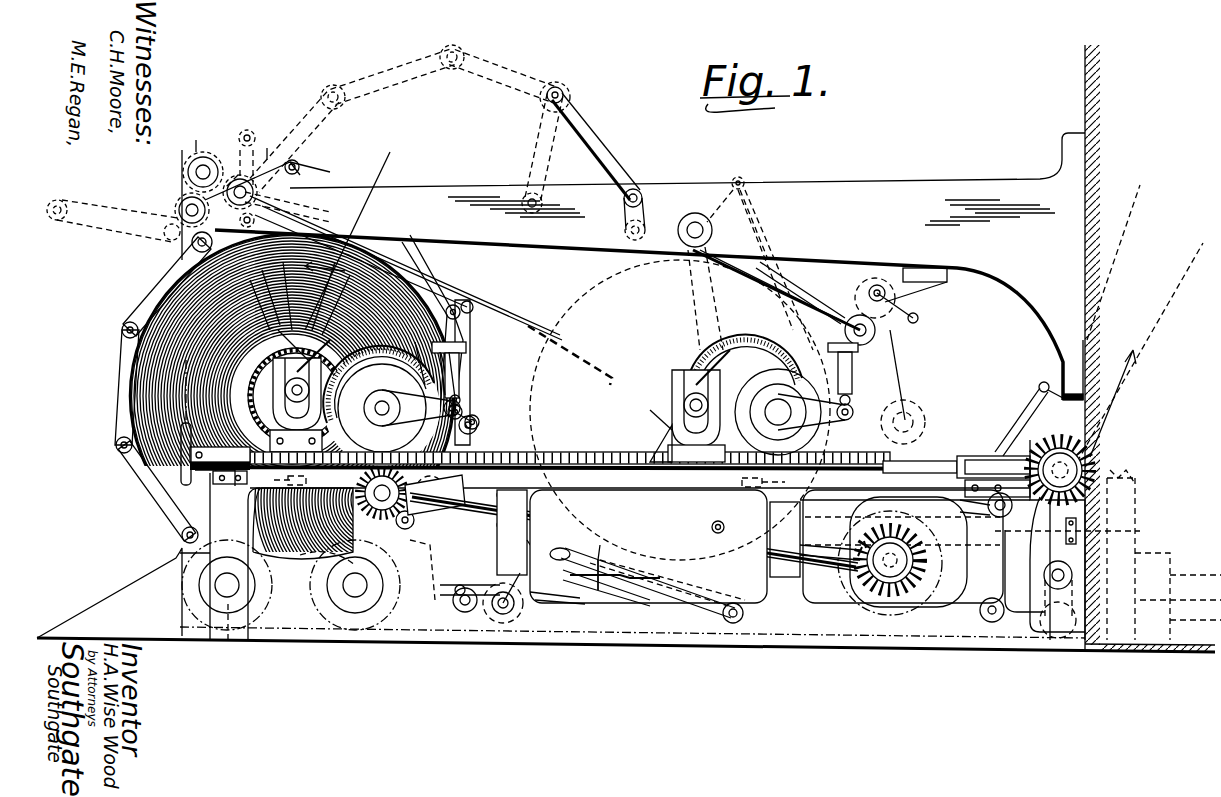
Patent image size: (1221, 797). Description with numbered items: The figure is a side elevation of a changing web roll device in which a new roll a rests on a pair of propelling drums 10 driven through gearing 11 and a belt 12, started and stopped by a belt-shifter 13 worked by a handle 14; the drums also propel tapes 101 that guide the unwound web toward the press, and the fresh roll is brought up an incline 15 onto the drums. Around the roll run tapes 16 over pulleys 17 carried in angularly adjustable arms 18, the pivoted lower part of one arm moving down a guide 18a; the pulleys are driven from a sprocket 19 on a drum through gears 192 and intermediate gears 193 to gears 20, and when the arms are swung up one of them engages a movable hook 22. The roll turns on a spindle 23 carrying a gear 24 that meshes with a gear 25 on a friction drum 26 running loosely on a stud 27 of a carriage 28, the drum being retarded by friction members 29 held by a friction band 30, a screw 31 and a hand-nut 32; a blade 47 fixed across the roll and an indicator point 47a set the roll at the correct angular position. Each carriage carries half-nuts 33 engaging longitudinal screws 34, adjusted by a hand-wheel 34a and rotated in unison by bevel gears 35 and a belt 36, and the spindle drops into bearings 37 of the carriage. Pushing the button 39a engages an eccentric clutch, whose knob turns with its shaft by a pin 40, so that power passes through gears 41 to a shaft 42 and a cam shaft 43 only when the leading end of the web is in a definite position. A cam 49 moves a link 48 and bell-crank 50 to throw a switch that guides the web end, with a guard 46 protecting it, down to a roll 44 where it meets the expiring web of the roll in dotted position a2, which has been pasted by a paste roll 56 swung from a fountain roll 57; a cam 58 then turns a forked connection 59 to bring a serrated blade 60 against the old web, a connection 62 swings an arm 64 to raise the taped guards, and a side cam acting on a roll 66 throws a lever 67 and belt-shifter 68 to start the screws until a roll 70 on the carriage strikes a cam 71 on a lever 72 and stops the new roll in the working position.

The propelling drums 10 is at (203, 620).
The gearing 11 is at (420, 660).
The belt 12 is at (1127, 486).
The belt-shifter 13 is at (1010, 530).
The handle 14 is at (650, 580).
The incline 15 is at (128, 597).
The tapes 16 is at (460, 250).
The pulleys 17 is at (505, 272).
The arms 18 is at (135, 398).
The guide 18a is at (478, 427).
The sprocket 19 is at (265, 605).
The gears 20 is at (422, 355).
The movable hook 22 is at (570, 110).
The spindle 23 is at (309, 342).
The gear 24 is at (280, 345).
The gear 25 is at (396, 372).
The friction drum 26 is at (720, 352).
The stud 27 is at (390, 408).
The carriage 28 is at (262, 404).
The friction members 29 is at (458, 375).
The friction band 30 is at (462, 362).
The screw 31 is at (465, 402).
The hand-nut 32 is at (466, 345).
The half-nuts 33 is at (262, 478).
The longitudinal screws 34 is at (640, 355).
The hand-wheel 34a is at (176, 466).
The bevel gears 35 is at (1062, 440).
The belt 36 is at (1112, 240).
The bearings 37 is at (272, 400).
The button 39a is at (376, 520).
The pin 40 is at (377, 500).
The gears 41 is at (497, 520).
The shaft 42 is at (560, 505).
The cam shaft 43 is at (885, 580).
The roll 44 is at (475, 612).
The guard 46 is at (310, 555).
The blade 47 is at (178, 258).
The indicator point 47a is at (324, 237).
The link 48 is at (598, 595).
The cam 49 is at (855, 605).
The bell-crank 50 is at (494, 552).
The paste roll 56 is at (860, 313).
The fountain roll 57 is at (870, 285).
The cam 58 is at (960, 610).
The forked connection 59 is at (725, 560).
The serrated blade 60 is at (570, 598).
The connection 62 is at (490, 305).
The arm 64 is at (276, 173).
The roll 66 is at (900, 490).
The lever 67 is at (985, 500).
The belt-shifter 68 is at (1020, 400).
The roll 70 is at (527, 480).
The cam 71 is at (715, 555).
The lever 72 is at (722, 532).
The tapes 101 is at (782, 665).
The gears 192 is at (215, 140).
The intermediate gears 193 is at (178, 205).
The new roll a is at (468, 277).
The expiring roll position a2 is at (679, 410).